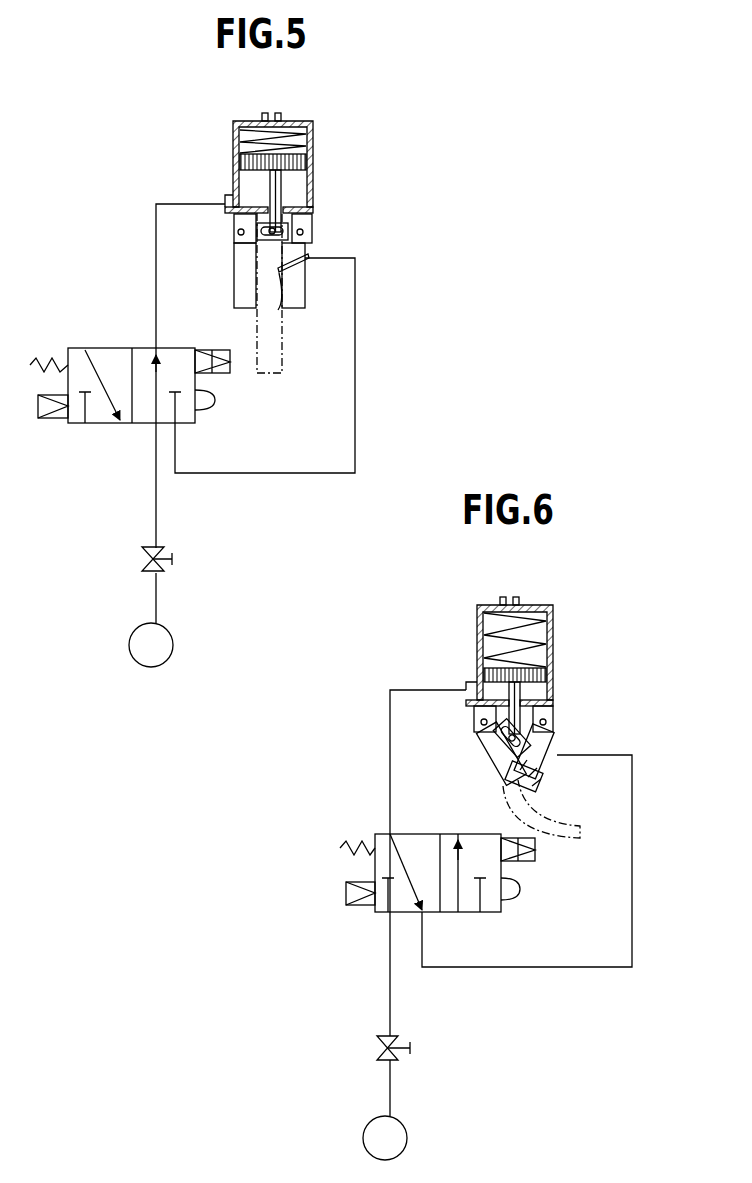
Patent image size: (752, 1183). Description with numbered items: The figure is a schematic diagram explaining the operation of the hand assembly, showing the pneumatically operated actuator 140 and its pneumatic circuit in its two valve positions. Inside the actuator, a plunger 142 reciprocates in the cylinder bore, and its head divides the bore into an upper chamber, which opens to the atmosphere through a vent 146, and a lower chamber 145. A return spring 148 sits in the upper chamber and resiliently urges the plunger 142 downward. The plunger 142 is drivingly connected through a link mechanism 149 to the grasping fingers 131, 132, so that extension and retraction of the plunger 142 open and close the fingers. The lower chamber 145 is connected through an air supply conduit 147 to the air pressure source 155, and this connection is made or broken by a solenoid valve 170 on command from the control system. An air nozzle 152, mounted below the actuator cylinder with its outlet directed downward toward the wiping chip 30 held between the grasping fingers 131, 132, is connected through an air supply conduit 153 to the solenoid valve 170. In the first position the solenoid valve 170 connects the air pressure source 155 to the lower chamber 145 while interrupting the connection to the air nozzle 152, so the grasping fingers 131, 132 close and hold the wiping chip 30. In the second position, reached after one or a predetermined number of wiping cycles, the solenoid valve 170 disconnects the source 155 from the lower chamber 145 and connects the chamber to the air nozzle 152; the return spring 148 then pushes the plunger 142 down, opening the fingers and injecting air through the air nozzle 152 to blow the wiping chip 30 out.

In FIG. 5, the wiping chip 30 is at (263, 373).
In FIG. 6, the wiping chip 30 is at (545, 840).
In FIG. 5, the grasping finger 131 is at (243, 275).
In FIG. 6, the grasping finger 131 is at (463, 751).
In FIG. 5, the grasping finger 132 is at (300, 280).
In FIG. 6, the grasping finger 132 is at (556, 750).
In FIG. 5, the pneumatically operated actuator 140 is at (318, 175).
In FIG. 6, the pneumatically operated actuator 140 is at (558, 632).
In FIG. 5, the plunger 142 is at (282, 200).
In FIG. 6, the plunger 142 is at (520, 690).
In FIG. 5, the lower chamber 145 is at (250, 190).
In FIG. 6, the lower chamber 145 is at (498, 688).
In FIG. 5, the vent 146 is at (270, 118).
In FIG. 6, the vent 146 is at (509, 603).
In FIG. 5, the air supply conduit 147 is at (157, 268).
In FIG. 6, the air supply conduit 147 is at (388, 760).
In FIG. 5, the return spring 148 is at (296, 130).
In FIG. 6, the return spring 148 is at (536, 618).
In FIG. 5, the link mechanism 149 is at (302, 231).
In FIG. 6, the link mechanism 149 is at (530, 738).
In FIG. 5, the air nozzle 152 is at (280, 280).
In FIG. 6, the air nozzle 152 is at (548, 786).
In FIG. 5, the air supply conduit 153 is at (356, 405).
In FIG. 6, the air supply conduit 153 is at (633, 905).
In FIG. 5, the air pressure source 155 is at (173, 645).
In FIG. 6, the air pressure source 155 is at (407, 1138).
In FIG. 5, the solenoid valve 170 is at (100, 425).
In FIG. 6, the solenoid valve 170 is at (372, 914).